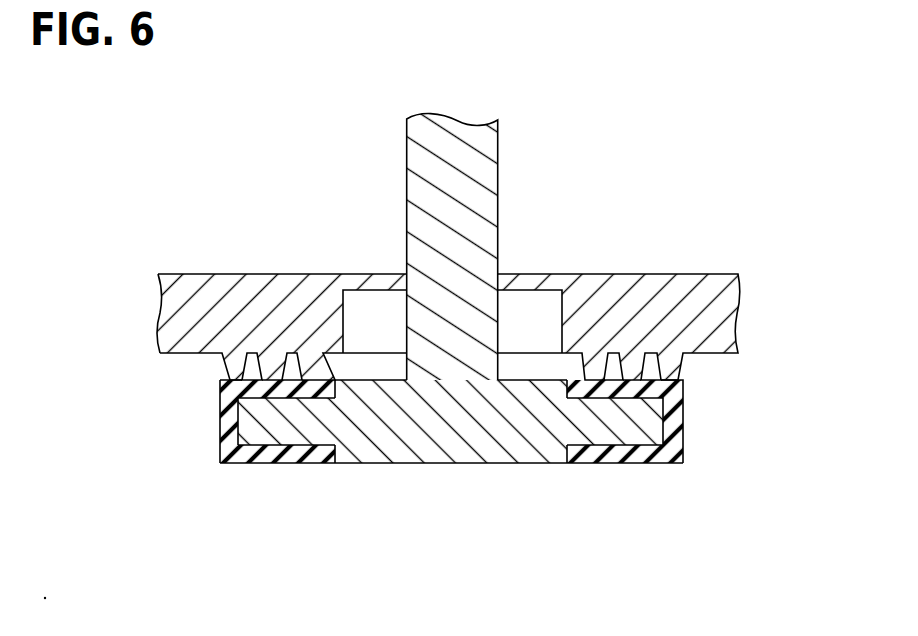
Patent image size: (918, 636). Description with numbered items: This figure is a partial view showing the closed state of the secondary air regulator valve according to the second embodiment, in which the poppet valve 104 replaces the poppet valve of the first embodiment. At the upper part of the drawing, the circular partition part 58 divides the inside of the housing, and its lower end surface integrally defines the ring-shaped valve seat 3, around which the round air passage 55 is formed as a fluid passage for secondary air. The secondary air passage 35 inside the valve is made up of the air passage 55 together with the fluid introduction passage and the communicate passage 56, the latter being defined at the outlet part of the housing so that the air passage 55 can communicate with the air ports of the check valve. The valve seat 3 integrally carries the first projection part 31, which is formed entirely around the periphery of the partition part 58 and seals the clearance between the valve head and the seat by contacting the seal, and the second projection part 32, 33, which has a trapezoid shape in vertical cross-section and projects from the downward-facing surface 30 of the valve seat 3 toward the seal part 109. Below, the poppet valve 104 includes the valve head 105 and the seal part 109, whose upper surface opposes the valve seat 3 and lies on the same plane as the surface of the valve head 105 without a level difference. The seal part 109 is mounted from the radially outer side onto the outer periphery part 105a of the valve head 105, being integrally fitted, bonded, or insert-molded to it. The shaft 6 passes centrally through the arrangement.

The valve seat 3 is at (698, 373).
The shaft 6 is at (420, 163).
The surface of the valve seat 30 is at (482, 374).
The first projection part 31 is at (313, 370).
The second projection part 32 is at (268, 382).
The second projection part 33 is at (231, 369).
The secondary air passage 35 is at (522, 168).
The air passage 55 is at (528, 300).
The communicate passage 56 is at (722, 438).
The partition part 58 is at (702, 293).
The poppet valve 104 is at (640, 476).
The valve head 105 is at (395, 452).
The outer periphery part 105a is at (250, 423).
The seal part 109 is at (274, 461).